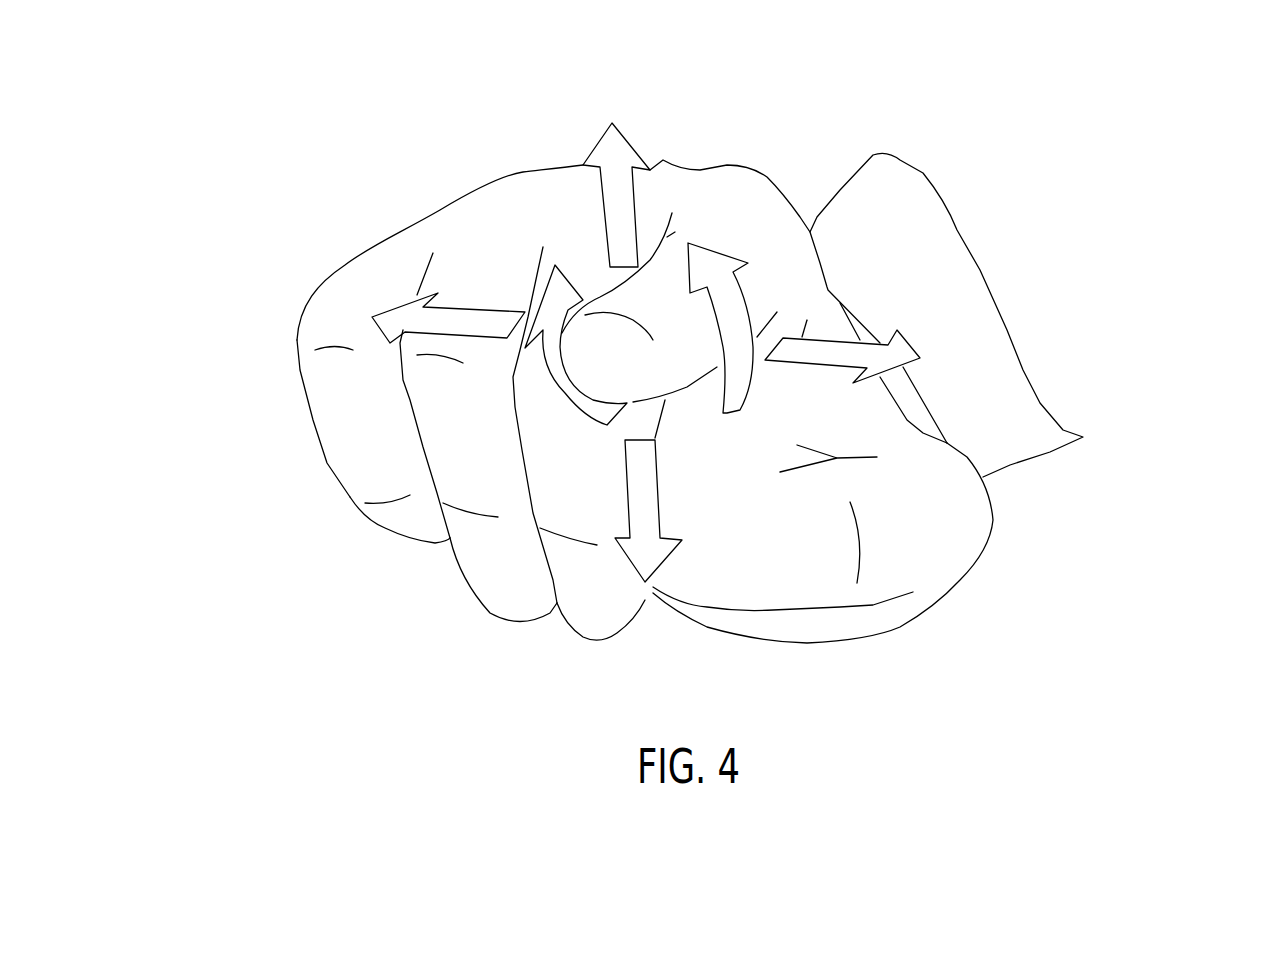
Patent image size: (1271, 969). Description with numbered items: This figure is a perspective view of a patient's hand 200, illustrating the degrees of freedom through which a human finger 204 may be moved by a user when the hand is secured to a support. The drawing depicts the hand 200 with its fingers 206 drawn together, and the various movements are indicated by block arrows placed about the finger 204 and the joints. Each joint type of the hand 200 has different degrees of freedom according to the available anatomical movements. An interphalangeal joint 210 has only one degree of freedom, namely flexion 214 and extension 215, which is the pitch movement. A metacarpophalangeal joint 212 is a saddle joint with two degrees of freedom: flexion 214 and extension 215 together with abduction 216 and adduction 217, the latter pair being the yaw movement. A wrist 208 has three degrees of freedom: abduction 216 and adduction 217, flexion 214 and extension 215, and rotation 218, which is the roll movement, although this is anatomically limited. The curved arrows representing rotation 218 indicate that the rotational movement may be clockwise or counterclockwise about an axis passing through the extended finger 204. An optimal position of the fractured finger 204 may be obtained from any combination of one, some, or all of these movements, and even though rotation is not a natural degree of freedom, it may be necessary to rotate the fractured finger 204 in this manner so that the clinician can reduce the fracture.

The hand 200 is at (333, 175).
The finger 204 is at (608, 330).
The fingers 206 is at (982, 270).
The wrist 208 is at (923, 418).
The interphalangeal joint 210 is at (400, 357).
The metacarpophalangeal joint 212 is at (755, 188).
The flexion 214 is at (645, 547).
The extension 215 is at (613, 155).
The abduction 216 is at (398, 325).
The adduction 217 is at (888, 358).
The rotation 218 is at (600, 407).